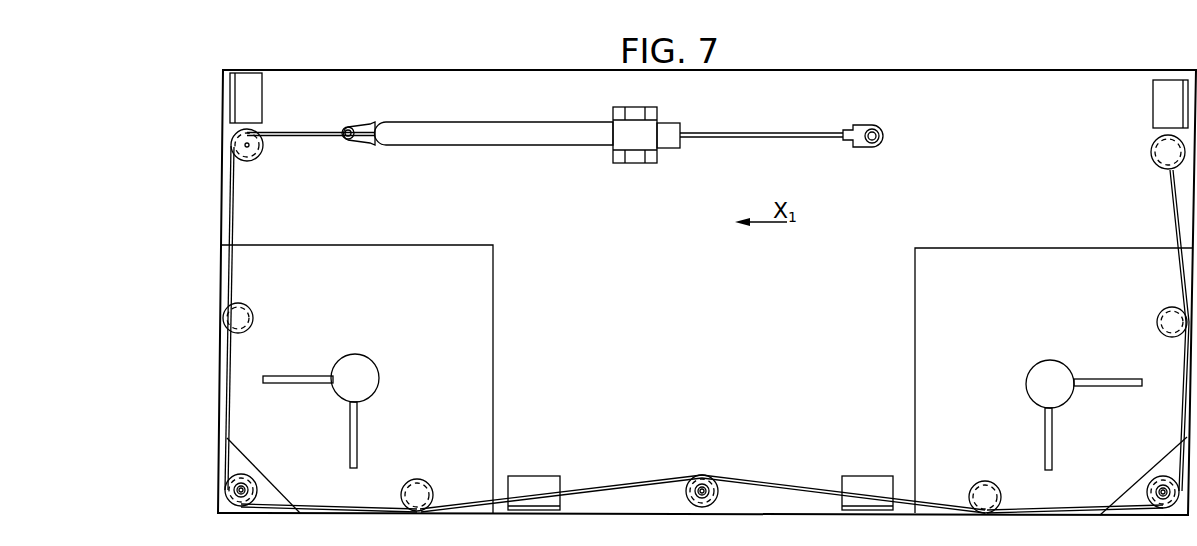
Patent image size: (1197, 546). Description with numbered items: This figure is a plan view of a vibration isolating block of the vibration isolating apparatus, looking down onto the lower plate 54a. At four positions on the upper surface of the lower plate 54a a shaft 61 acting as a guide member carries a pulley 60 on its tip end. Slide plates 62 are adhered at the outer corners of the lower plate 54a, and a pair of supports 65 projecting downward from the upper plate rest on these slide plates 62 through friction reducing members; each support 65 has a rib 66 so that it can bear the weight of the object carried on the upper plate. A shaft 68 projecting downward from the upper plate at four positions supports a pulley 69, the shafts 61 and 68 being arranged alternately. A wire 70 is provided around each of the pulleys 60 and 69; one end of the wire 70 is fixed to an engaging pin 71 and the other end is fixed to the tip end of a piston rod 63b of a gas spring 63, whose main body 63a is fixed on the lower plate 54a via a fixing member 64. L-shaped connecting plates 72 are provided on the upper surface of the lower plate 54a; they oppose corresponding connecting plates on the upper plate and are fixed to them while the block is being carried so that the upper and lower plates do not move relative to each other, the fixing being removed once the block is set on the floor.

The lower plate 54a is at (849, 62).
The pulley 60 is at (251, 162).
The shaft 61 is at (262, 150).
The slide plate 62 is at (493, 322).
The gas spring 63 is at (612, 143).
The main body 63a is at (519, 145).
The piston rod 63b is at (750, 138).
The fixing member 64 is at (634, 163).
The support 65 is at (372, 367).
The rib 66 is at (297, 375).
The shaft 68 is at (255, 318).
The pulley 69 is at (249, 305).
The wire 70 is at (657, 483).
The engaging pin 71 is at (1152, 153).
The connecting plate 72 is at (262, 94).